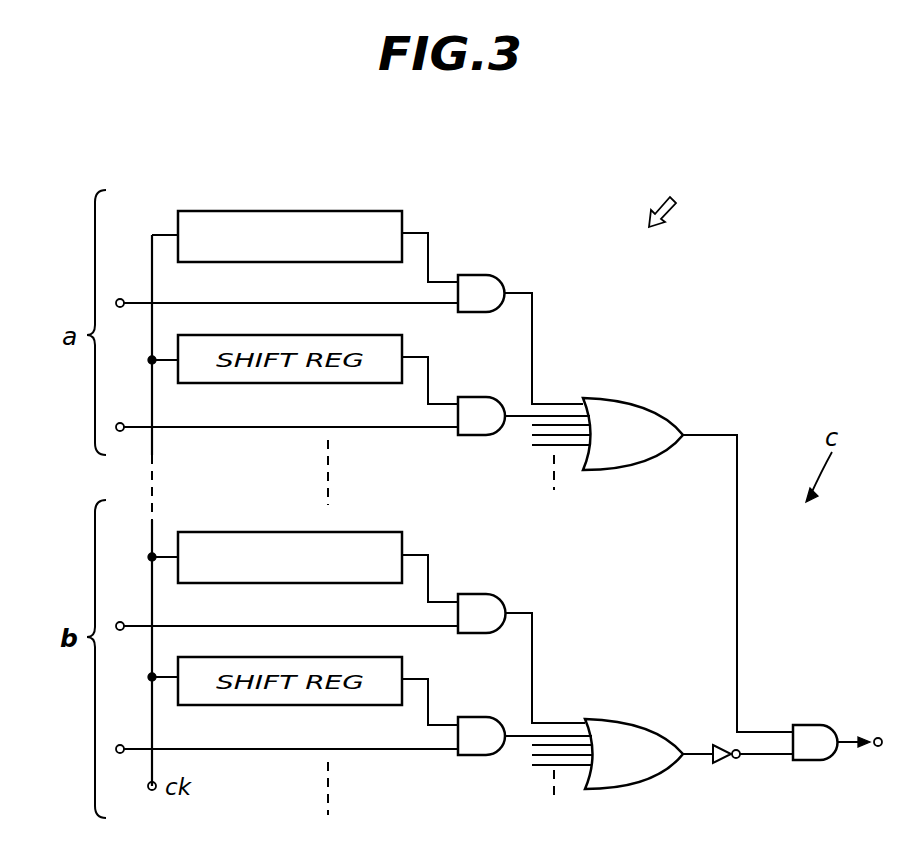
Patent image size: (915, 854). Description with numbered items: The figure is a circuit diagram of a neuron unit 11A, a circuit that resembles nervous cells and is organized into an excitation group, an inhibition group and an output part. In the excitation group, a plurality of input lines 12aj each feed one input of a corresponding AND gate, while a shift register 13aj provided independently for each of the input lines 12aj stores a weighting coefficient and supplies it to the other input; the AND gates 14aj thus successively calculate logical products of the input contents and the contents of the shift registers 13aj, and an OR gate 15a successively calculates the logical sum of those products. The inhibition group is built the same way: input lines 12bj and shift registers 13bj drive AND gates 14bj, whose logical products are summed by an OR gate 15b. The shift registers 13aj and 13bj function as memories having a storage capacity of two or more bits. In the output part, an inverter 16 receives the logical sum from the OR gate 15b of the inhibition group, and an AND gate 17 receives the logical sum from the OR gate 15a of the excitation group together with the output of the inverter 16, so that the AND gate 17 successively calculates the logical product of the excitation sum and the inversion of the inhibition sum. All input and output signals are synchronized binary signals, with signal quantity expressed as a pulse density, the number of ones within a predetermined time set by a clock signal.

The neuron unit 11A is at (678, 197).
The input lines 12aj is at (128, 300).
The input lines 12bj is at (128, 623).
The shift registers 13aj is at (292, 210).
The shift registers 13bj is at (372, 530).
The AND gates 14aj is at (486, 274).
The AND gates 14bj is at (480, 593).
The OR gate 15a is at (620, 397).
The OR gate 15b is at (618, 718).
The inverter 16 is at (724, 746).
The AND gate 17 is at (808, 724).